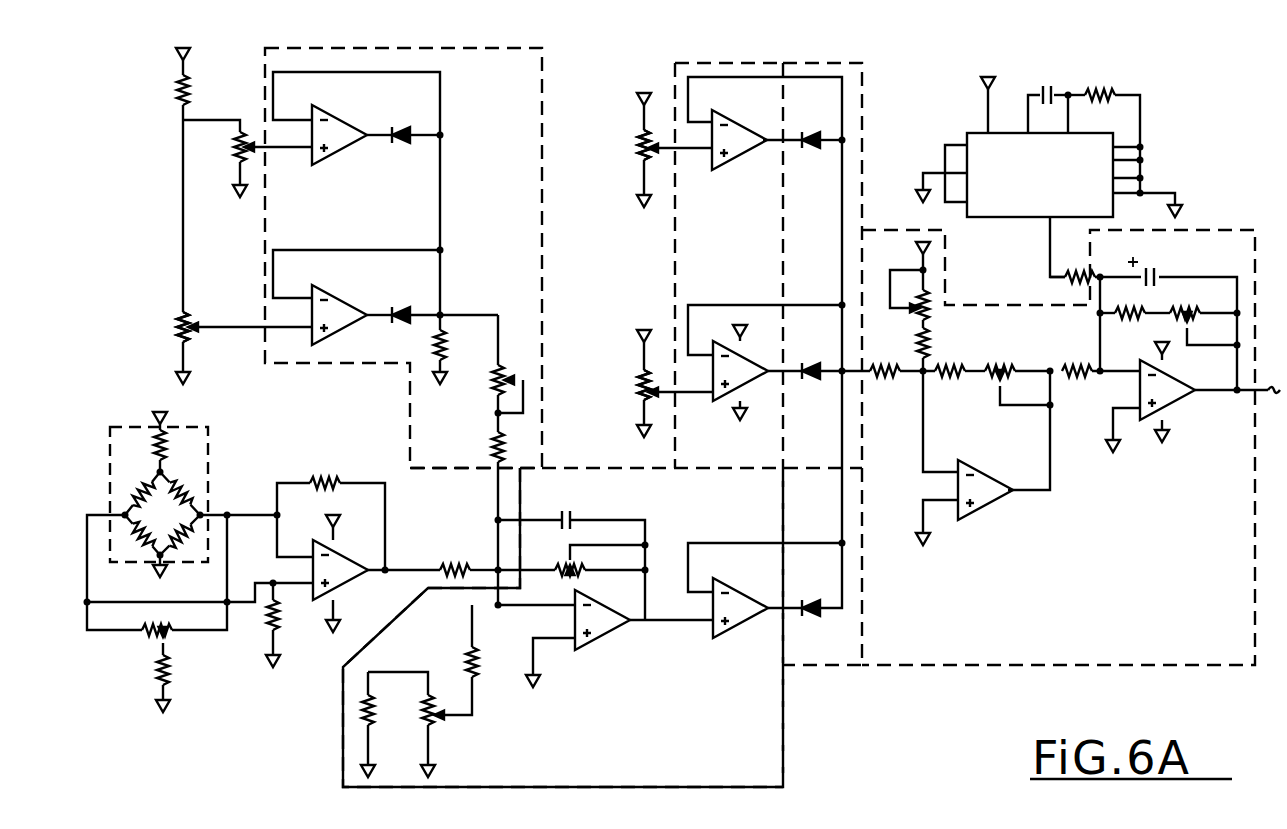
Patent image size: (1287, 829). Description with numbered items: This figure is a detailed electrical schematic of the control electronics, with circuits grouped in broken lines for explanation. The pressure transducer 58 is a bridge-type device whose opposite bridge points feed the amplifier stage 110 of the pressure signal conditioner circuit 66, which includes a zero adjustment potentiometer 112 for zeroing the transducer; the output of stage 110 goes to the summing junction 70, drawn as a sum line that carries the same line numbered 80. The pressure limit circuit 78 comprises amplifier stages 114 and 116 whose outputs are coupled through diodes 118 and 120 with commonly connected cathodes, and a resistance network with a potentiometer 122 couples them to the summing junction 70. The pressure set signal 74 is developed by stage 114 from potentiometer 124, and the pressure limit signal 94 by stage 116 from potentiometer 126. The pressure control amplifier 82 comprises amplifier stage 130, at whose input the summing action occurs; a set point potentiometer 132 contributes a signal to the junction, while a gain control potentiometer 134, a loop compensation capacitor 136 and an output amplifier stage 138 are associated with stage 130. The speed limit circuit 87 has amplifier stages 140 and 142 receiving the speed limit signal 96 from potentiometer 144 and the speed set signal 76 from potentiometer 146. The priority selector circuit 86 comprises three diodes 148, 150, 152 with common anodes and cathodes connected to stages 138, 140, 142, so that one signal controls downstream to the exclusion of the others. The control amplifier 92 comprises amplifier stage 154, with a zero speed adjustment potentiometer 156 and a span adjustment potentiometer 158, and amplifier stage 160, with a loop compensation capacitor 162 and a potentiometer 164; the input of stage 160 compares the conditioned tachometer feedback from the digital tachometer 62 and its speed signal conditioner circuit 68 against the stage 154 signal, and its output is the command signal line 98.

The pressure transducer 58 is at (212, 476).
The tachometer 62 is at (930, 124).
The pressure signal conditioner circuit 66 is at (245, 665).
The speed signal conditioner circuit 68 is at (1158, 124).
The summing junction 70 is at (494, 532).
The pressure set signal 74 is at (123, 180).
The speed set signal 76 is at (631, 150).
The pressure limit circuit 78 is at (546, 80).
The sum line 80 is at (524, 576).
The pressure control amplifier 82 is at (596, 790).
The priority selector circuit 86 is at (865, 118).
The speed limit circuit 87 is at (673, 265).
The control amplifier 92 is at (1005, 667).
The pressure limit signal 94 is at (188, 335).
The speed limit signal 96 is at (634, 383).
The command signal line 98 is at (1220, 395).
The amplifier stage 110 is at (350, 553).
The zero adjustment potentiometer 112 is at (147, 647).
The amplifier stage 114 is at (338, 118).
The amplifier stage 116 is at (345, 294).
The diode 118 is at (398, 146).
The diode 120 is at (400, 323).
The potentiometer 122 is at (505, 368).
The potentiometer 124 is at (241, 128).
The potentiometer 126 is at (187, 315).
The amplifier stage 130 is at (606, 646).
The set point adjustment potentiometer 132 is at (443, 724).
The gain control potentiometer 134 is at (588, 535).
The loop compensation capacitor 136 is at (562, 512).
The output amplifier stage 138 is at (736, 641).
The amplifier stage 140 is at (747, 396).
The amplifier stage 142 is at (748, 130).
The speed limit potentiometer 144 is at (640, 397).
The speed set potentiometer 146 is at (640, 156).
The diode 148 is at (812, 613).
The diode 150 is at (811, 378).
The diode 152 is at (811, 147).
The amplifier stage 154 is at (996, 507).
The zero speed adjustment potentiometer 156 is at (931, 308).
The span adjustment potentiometer 158 is at (998, 388).
The amplifier stage 160 is at (1186, 406).
The loop compensation capacitor 162 is at (1160, 271).
The potentiometer 164 is at (1204, 318).